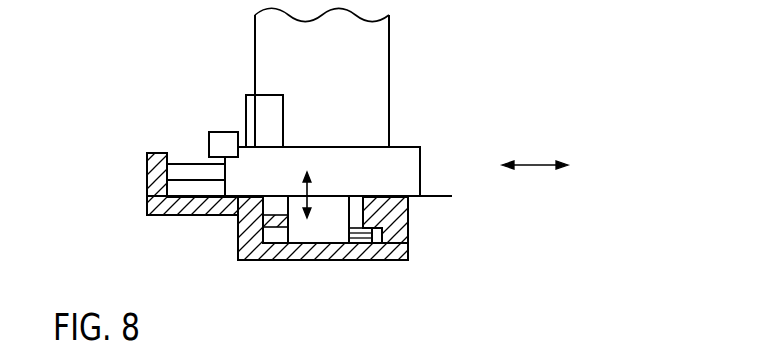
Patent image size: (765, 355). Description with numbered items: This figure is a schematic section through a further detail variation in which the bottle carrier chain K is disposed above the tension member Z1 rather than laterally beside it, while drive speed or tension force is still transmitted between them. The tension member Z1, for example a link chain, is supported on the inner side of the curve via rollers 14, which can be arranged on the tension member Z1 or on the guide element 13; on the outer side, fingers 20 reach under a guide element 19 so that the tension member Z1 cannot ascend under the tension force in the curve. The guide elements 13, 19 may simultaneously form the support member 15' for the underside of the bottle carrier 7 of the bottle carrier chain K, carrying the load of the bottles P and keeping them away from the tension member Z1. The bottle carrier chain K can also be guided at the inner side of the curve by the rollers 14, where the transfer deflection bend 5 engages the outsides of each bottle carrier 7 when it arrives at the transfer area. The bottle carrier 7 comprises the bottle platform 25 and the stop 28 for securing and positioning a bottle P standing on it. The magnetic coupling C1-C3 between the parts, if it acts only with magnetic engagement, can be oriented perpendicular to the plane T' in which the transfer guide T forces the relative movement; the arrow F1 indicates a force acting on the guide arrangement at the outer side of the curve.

The transfer deflection bend 5 is at (220, 134).
The bottle carrier 7 is at (283, 162).
The guide element 13 is at (258, 248).
The rollers 14 is at (182, 167).
The support member 15' is at (189, 230).
The guide element 19 is at (390, 250).
The fingers 20 is at (385, 235).
The bottle platform 25 is at (403, 133).
The stop 28 is at (252, 93).
The bottle P is at (382, 37).
The transfer guide T is at (177, 94).
The plane of relative movement T' is at (535, 141).
The bottle carrier chain K is at (433, 175).
The force F1 is at (416, 264).
The tension member Z1 is at (322, 237).
The magnetic coupling C1-C3 is at (308, 192).